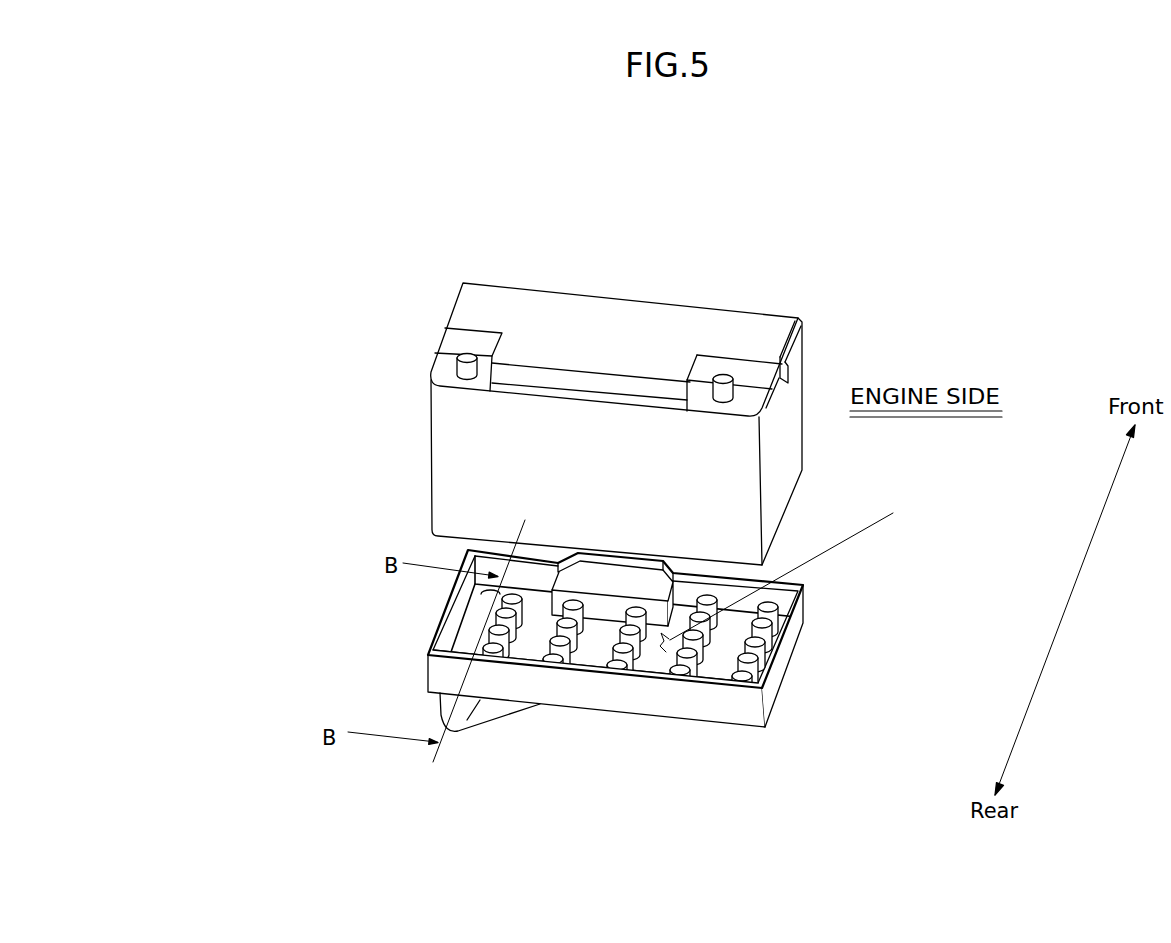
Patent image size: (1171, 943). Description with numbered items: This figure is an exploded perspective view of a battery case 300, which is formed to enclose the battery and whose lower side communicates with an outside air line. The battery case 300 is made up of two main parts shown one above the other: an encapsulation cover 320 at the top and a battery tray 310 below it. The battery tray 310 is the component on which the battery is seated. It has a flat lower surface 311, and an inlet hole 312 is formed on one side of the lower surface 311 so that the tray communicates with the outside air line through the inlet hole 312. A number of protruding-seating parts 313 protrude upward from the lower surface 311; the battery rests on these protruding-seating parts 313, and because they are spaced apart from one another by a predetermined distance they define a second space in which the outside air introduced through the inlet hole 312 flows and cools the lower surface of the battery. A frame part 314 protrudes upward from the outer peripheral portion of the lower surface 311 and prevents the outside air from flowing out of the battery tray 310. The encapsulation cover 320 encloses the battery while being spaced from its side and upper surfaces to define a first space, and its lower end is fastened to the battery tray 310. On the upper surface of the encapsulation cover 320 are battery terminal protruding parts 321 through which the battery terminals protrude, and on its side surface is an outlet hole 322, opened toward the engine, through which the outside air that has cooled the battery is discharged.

The battery case 300 is at (240, 432).
The battery tray 310 is at (437, 672).
The lower surface 311 is at (735, 637).
The inlet hole 312 is at (500, 602).
The protruding-seating parts 313 is at (775, 648).
The frame part 314 is at (725, 708).
The encapsulation cover 320 is at (468, 312).
The battery terminal protruding parts 321 is at (723, 378).
The outlet hole 322 is at (800, 340).